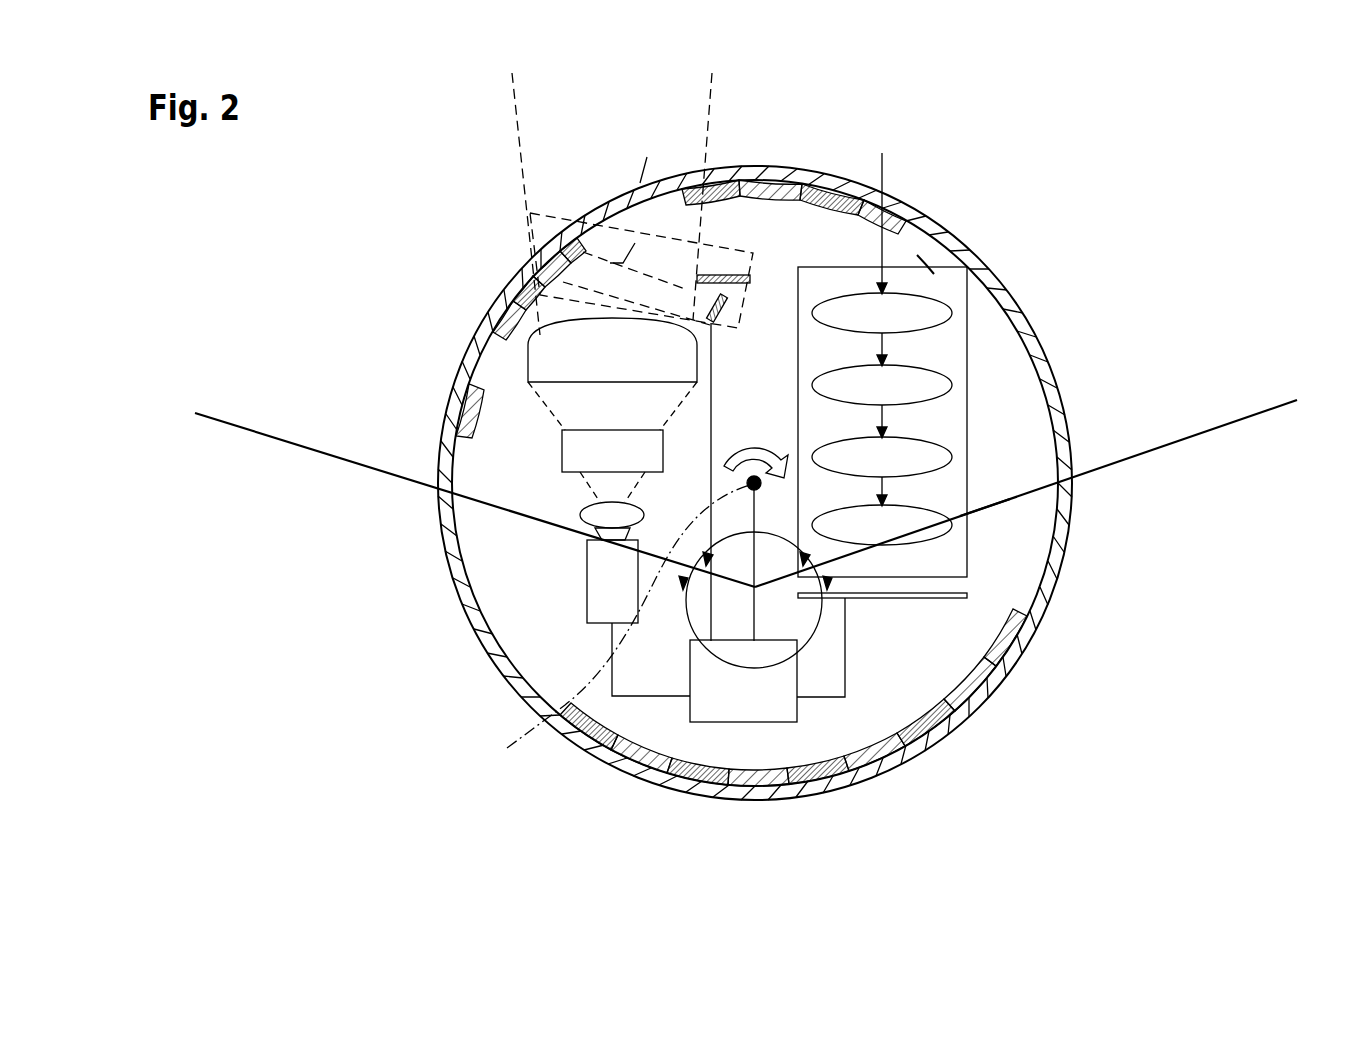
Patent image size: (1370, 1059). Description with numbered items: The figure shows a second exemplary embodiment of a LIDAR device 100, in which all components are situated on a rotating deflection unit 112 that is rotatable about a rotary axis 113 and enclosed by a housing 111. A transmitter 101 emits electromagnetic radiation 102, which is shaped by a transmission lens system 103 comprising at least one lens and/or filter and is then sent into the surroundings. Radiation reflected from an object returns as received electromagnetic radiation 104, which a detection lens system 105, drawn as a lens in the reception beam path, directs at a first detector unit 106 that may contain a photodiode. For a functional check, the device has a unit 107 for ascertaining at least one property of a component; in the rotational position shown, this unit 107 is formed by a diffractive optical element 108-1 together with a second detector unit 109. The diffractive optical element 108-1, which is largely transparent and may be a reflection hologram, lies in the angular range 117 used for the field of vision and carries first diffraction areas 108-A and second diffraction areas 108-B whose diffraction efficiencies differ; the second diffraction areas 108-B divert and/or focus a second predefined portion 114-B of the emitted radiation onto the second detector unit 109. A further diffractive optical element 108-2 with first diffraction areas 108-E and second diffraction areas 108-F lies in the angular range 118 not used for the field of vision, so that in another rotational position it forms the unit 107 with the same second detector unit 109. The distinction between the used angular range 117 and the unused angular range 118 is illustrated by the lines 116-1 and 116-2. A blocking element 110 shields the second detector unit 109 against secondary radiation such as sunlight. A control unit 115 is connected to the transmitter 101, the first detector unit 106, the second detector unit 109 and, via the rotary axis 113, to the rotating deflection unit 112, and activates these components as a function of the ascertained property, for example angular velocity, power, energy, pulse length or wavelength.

The LIDAR device 100 is at (1105, 165).
The transmitter 101 is at (612, 590).
The electromagnetic radiation 102 is at (512, 121).
The transmission lens system 103 is at (553, 360).
The received electromagnetic radiation 104 is at (915, 250).
The detection lens system 105 is at (947, 427).
The first detector unit 106 is at (962, 595).
The unit for ascertaining at least one property 107 is at (523, 246).
The first diffraction area 108-A is at (847, 180).
The second diffraction area 108-B is at (897, 222).
The first diffraction area 108-E is at (927, 722).
The second diffraction area 108-F is at (930, 713).
The diffractive optical element 108-1 is at (975, 126).
The diffractive optical element 108-2 is at (1085, 725).
The second detector unit 109 is at (745, 312).
The blocking element 110 is at (722, 275).
The housing 111 is at (1017, 313).
The rotating deflection unit 112 is at (977, 627).
The rotary axis 113 is at (608, 624).
The second predefined portion 114-B is at (661, 196).
The control unit 115 is at (741, 710).
The line 116-1 is at (272, 435).
The line 116-2 is at (1228, 425).
The angular range used for a field of vision 117 is at (983, 510).
The angular range not used for a field of vision 118 is at (817, 632).